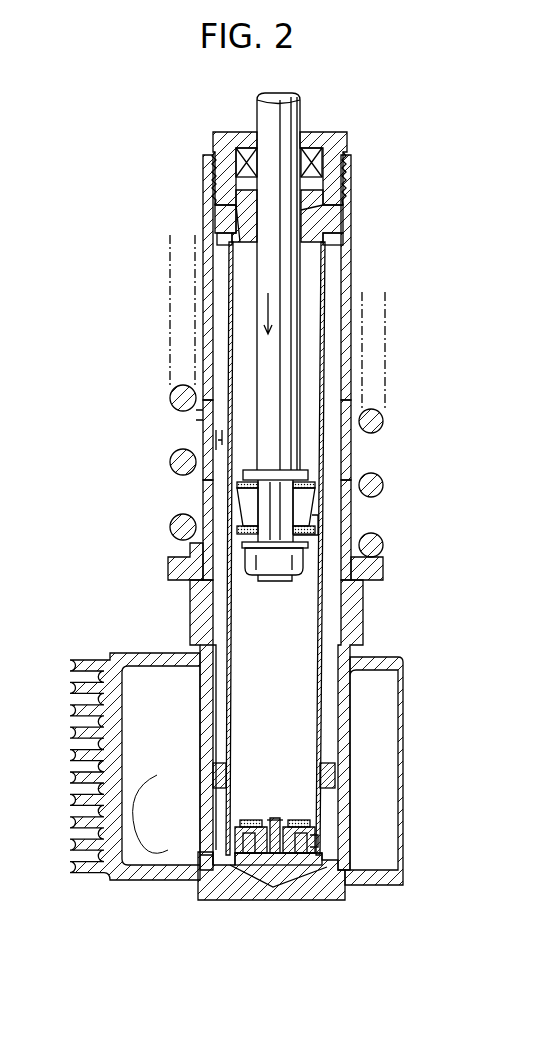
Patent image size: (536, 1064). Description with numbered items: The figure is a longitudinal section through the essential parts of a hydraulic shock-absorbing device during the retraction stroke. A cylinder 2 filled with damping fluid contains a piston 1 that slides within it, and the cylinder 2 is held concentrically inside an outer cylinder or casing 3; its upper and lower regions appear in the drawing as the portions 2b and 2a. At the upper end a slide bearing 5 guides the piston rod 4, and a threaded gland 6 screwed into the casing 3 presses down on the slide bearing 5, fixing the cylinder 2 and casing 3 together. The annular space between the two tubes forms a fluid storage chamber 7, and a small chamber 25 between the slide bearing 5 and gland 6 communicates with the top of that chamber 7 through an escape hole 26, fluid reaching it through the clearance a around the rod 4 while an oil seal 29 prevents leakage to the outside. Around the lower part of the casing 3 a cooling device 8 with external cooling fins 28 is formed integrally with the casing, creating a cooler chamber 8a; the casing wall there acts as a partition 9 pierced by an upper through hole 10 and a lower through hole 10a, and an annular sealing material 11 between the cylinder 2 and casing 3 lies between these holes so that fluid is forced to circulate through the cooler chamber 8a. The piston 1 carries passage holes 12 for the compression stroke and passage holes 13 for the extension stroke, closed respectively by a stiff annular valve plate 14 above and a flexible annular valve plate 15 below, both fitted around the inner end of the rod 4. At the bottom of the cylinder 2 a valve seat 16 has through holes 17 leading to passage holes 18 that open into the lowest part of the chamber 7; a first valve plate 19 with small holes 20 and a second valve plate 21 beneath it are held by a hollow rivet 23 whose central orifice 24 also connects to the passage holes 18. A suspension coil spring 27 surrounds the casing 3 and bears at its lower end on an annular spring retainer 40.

The piston 1 is at (307, 502).
The cylinder 2 is at (326, 345).
The lower cylinder portion 2a is at (360, 648).
The upper cylinder portion 2b is at (317, 263).
The outer cylinder or casing 3 is at (345, 302).
The piston rod 4 is at (298, 118).
The slide bearing 5 is at (340, 217).
The gland 6 is at (347, 140).
The fluid storage chamber 7 is at (222, 357).
The cooling device 8 is at (155, 653).
The cooler chamber 8a is at (132, 677).
The partition 9 is at (205, 753).
The upper through hole 10 is at (203, 700).
The lower through hole 10a is at (197, 870).
The annular sealing material 11 is at (208, 777).
The passage hole 12 is at (235, 497).
The passage hole 13 is at (317, 520).
The annular valve plate 14 is at (320, 473).
The annular valve plate 15 is at (252, 603).
The valve seat 16 is at (347, 893).
The through holes 17 is at (250, 867).
The passage holes 18 is at (232, 867).
The first valve plate 19 is at (300, 827).
The small holes 20 is at (240, 822).
The second valve plate 21 is at (310, 847).
The hollow rivet 23 is at (300, 823).
The central orifice 24 is at (277, 823).
The small chamber 25 is at (247, 187).
The escape hole 26 is at (230, 217).
The suspension coil spring 27 is at (170, 398).
The cooling fins 28 is at (70, 729).
The oil seal 29 is at (247, 152).
The annular spring retainer 40 is at (172, 567).
The clearance a is at (260, 247).